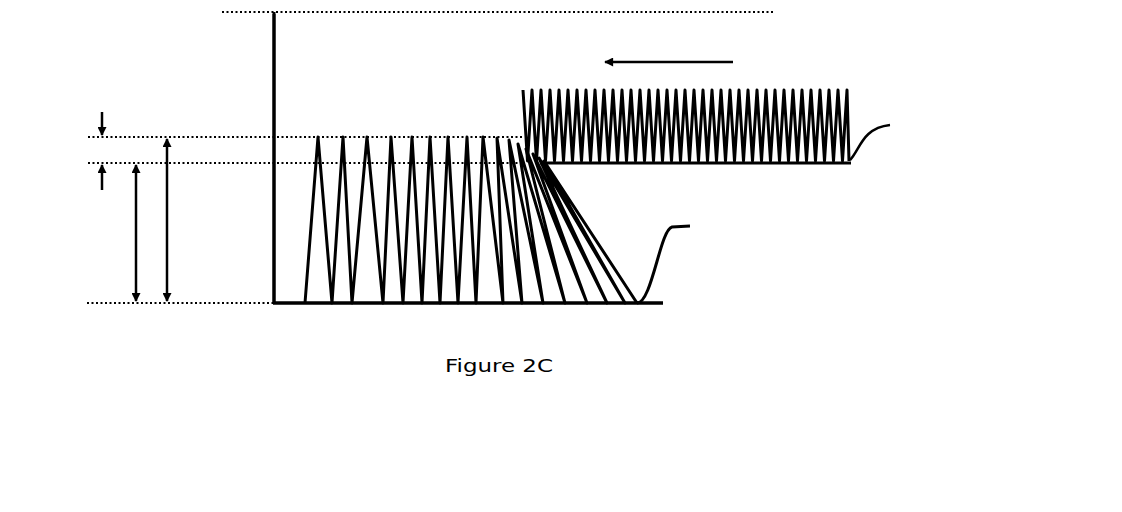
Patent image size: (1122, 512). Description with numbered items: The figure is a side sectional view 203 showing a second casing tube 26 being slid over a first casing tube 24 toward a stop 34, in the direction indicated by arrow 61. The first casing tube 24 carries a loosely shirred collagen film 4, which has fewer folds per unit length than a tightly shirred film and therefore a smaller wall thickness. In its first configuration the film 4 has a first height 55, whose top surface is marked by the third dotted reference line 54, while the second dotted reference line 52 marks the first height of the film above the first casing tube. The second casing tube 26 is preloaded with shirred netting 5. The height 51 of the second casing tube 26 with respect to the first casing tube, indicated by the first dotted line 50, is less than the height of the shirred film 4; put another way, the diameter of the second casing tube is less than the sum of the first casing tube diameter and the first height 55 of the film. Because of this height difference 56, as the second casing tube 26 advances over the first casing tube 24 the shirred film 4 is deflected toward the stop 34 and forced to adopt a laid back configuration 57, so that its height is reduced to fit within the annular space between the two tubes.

The side sectional view 203 is at (162, 50).
The stop 34 is at (266, 90).
The second dotted reference line 52 is at (517, 11).
The third dotted reference line 54 is at (291, 137).
The first dotted reference line 50 is at (291, 163).
The height difference 56 is at (99, 151).
The height of the second casing tube 51 is at (180, 234).
The first height 55 is at (185, 220).
The laid back configuration 57 is at (586, 190).
The loosely shirred film 4 is at (684, 246).
The first casing tube 24 is at (671, 302).
The shirred netting 5 is at (854, 98).
The second casing tube 26 is at (855, 164).
The arrow 61 is at (686, 62).